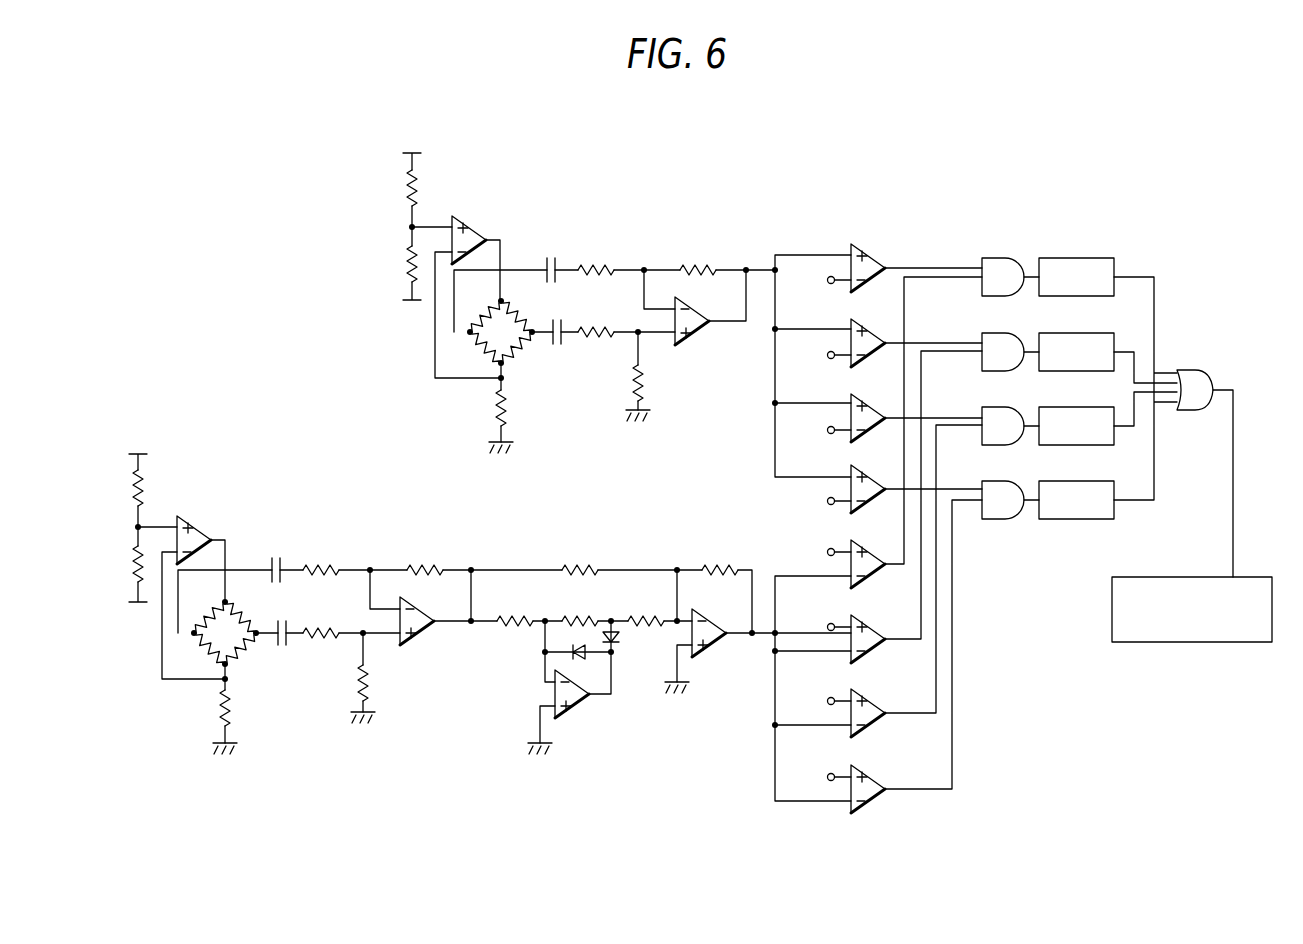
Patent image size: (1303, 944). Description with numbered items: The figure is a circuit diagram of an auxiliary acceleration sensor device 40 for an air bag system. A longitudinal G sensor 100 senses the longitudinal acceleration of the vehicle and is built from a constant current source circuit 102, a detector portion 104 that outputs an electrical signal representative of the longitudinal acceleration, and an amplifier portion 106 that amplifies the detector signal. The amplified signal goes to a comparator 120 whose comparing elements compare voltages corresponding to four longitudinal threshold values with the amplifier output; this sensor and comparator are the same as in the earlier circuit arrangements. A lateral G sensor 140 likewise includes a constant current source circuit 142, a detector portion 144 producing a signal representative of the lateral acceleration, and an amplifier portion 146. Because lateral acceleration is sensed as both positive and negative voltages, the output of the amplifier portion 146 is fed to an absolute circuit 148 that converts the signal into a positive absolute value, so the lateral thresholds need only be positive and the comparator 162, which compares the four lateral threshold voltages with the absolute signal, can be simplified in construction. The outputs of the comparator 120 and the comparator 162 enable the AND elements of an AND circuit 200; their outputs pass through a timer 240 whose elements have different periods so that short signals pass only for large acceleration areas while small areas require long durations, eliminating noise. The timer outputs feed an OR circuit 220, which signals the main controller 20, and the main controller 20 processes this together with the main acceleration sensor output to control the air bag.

The longitudinal G sensor 100 is at (225, 206).
The constant current source circuit 102 is at (481, 238).
The detector portion 104 is at (505, 319).
The amplifier portion 106 is at (757, 245).
The auxiliary acceleration sensor device 40 is at (818, 188).
The comparator 120 is at (879, 230).
The AND circuit 200 is at (1008, 362).
The timer 240 is at (1099, 230).
The OR circuit 220 is at (1191, 411).
The main controller 20 is at (1112, 610).
The lateral G sensor 140 is at (465, 765).
The constant current source circuit 142 is at (206, 539).
The detector portion 144 is at (228, 618).
The amplifier portion 146 is at (467, 545).
The absolute circuit 148 is at (482, 545).
The comparator 162 is at (841, 845).